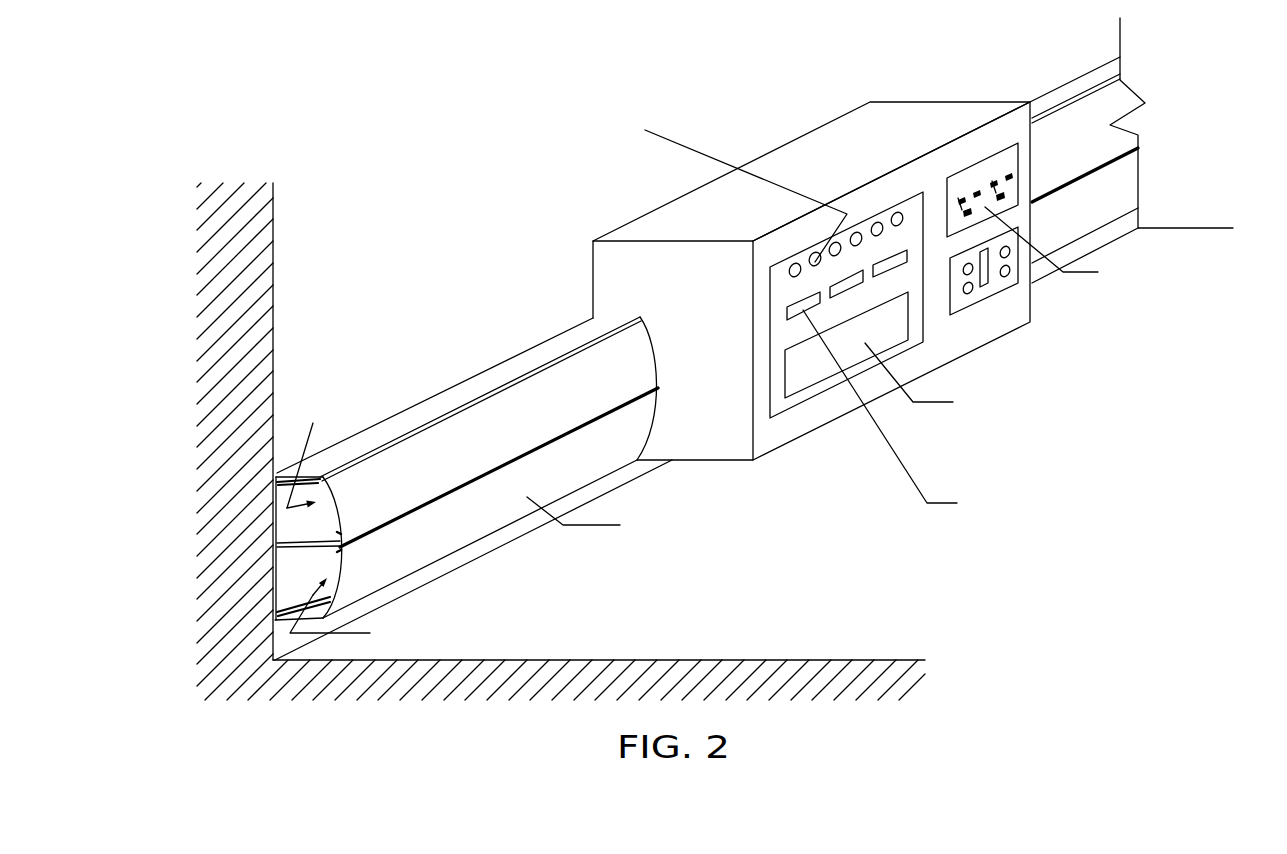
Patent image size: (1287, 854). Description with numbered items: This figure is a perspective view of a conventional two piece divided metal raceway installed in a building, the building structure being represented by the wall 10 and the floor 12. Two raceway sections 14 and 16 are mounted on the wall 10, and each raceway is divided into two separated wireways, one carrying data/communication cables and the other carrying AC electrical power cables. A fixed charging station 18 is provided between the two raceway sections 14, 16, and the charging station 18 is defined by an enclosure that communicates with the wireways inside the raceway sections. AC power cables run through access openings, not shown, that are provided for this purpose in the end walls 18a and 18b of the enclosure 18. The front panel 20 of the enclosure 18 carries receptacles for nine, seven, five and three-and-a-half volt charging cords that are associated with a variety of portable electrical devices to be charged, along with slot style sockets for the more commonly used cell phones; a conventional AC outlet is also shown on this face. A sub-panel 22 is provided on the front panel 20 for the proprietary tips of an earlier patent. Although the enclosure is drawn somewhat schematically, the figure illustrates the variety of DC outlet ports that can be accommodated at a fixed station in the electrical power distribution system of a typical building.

The wall 10 is at (273, 238).
The floor 12 is at (790, 660).
The raceway section 14 is at (481, 383).
The raceway section 16 is at (1063, 88).
The fixed charging station 18 is at (887, 299).
The end wall 18a is at (613, 273).
The end wall 18b is at (890, 299).
The front panel 20 is at (983, 328).
The sub-panel 22 is at (847, 353).